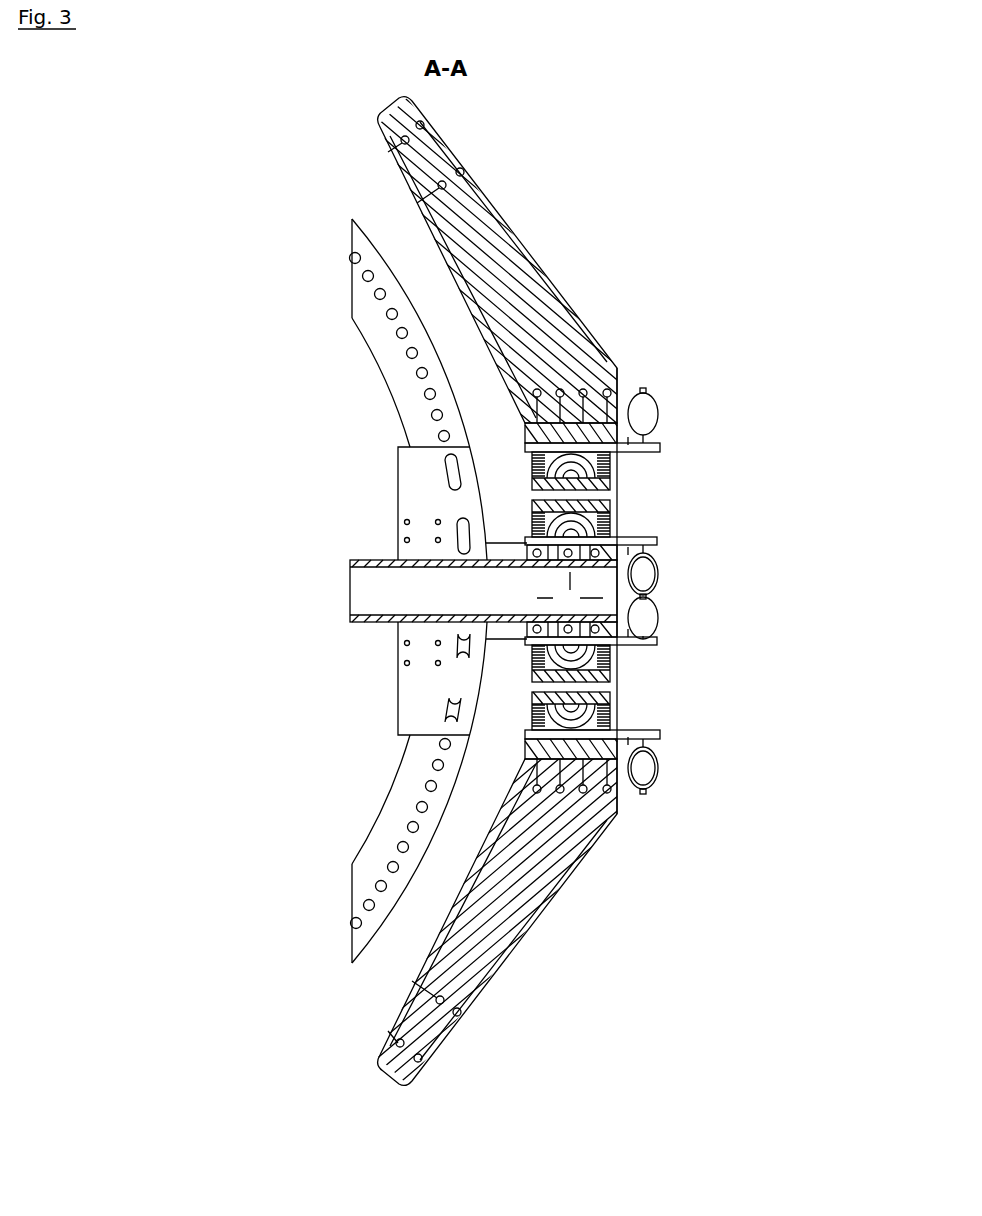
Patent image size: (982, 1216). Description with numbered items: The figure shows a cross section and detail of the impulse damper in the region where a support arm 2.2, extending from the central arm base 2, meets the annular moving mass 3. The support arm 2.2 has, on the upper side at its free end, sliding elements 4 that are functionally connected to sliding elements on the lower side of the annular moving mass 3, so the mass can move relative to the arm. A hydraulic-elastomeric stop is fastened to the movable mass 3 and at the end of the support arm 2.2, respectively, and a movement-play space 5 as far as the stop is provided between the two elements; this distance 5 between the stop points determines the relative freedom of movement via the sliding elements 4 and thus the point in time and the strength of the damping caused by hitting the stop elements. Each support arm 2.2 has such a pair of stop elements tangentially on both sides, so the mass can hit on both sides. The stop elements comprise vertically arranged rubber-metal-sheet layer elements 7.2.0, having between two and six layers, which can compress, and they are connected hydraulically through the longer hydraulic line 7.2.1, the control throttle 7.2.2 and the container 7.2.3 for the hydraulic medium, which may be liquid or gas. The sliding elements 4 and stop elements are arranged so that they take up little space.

The support arm base 2 is at (376, 518).
The support arm 2.2 is at (385, 590).
The annular moving mass 3 is at (601, 305).
The sliding elements 4 is at (570, 593).
The movement-play space 5 is at (549, 479).
The rubber-metal-sheet layer element 7.2.0 is at (625, 500).
The longer hydraulic line 7.2.1 is at (643, 710).
The control throttle 7.2.2 is at (666, 721).
The container for the hydraulic medium 7.2.3 is at (672, 543).